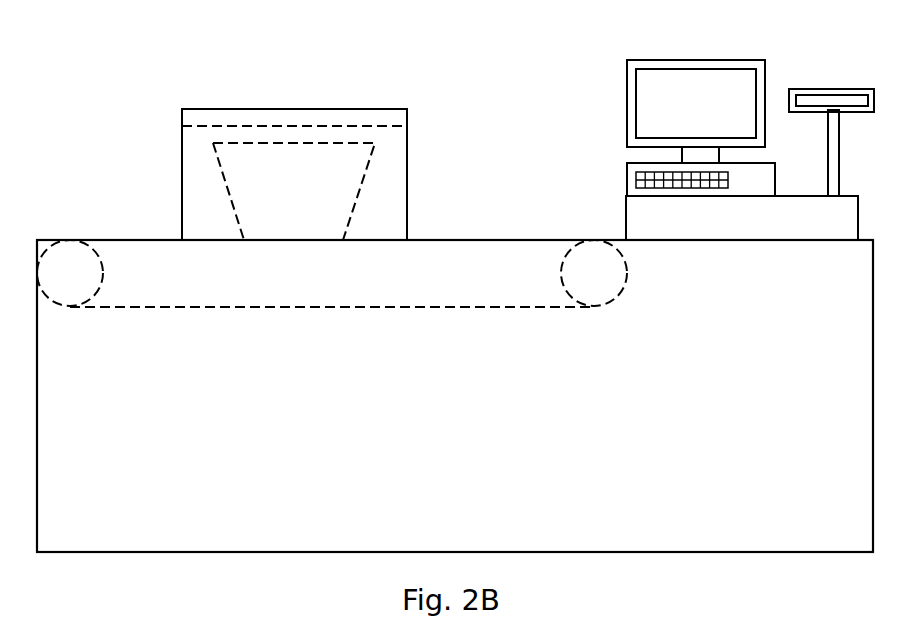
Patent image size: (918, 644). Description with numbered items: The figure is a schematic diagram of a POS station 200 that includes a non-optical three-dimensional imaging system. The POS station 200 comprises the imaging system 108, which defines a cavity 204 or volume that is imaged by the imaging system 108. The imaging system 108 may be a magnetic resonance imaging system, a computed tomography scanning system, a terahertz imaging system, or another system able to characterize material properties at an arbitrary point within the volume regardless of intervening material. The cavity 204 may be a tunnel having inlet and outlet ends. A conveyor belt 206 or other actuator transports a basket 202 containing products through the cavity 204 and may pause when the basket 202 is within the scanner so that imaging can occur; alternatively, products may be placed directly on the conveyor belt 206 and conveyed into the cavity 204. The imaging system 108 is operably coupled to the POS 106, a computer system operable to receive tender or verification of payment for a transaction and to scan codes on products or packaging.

The POS station 200 is at (500, 92).
The POS imaging system 108 is at (315, 109).
The cavity 204 is at (337, 126).
The basket 202 is at (227, 180).
The conveyor belt 206 is at (203, 308).
The point of sale (POS) 106 is at (686, 116).